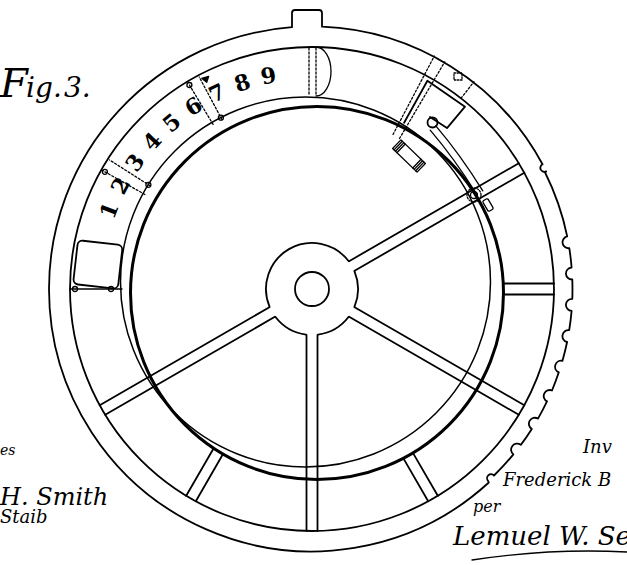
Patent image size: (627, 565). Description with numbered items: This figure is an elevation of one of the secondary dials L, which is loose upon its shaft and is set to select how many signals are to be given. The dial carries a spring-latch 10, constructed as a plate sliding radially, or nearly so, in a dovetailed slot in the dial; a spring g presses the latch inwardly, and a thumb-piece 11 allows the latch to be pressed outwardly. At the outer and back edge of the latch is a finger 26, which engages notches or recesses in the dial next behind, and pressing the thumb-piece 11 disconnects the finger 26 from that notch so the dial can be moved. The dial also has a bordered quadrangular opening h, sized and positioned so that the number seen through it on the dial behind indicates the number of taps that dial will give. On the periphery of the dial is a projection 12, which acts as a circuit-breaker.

The projection 12 is at (322, 16).
The finger 26 is at (462, 75).
The spring-latch 10 is at (434, 104).
The thumb-piece 11 is at (411, 167).
The spring g is at (477, 168).
The indicator a is at (320, 71).
The quadrangular opening h is at (96, 265).
The secondary dial L is at (340, 113).